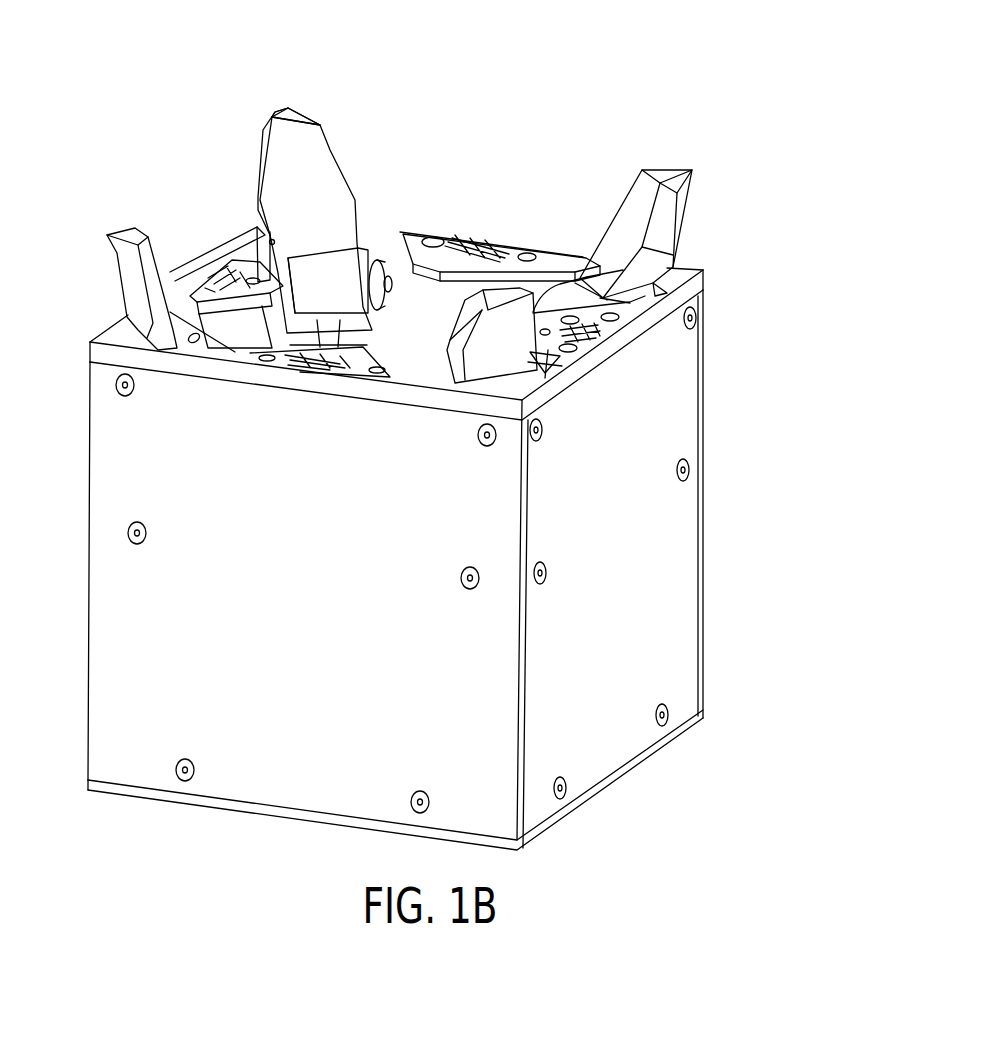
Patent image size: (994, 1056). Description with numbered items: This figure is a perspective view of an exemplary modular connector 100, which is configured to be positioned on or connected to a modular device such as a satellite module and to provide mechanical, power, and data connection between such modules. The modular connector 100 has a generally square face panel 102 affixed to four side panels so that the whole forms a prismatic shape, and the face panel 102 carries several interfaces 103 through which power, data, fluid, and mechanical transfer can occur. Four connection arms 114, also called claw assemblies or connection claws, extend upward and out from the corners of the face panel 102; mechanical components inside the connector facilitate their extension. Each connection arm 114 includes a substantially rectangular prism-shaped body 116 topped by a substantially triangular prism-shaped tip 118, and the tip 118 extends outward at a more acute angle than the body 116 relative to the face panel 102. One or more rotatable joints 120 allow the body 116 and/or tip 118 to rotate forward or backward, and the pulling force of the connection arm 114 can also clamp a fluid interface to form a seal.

The modular connector 100 is at (755, 100).
The face panel 102 is at (235, 230).
The interfaces 103 is at (205, 266).
The connection arm 114 is at (333, 163).
The body 116 is at (353, 205).
The tip 118 is at (285, 108).
The rotatable joint 120 is at (387, 273).